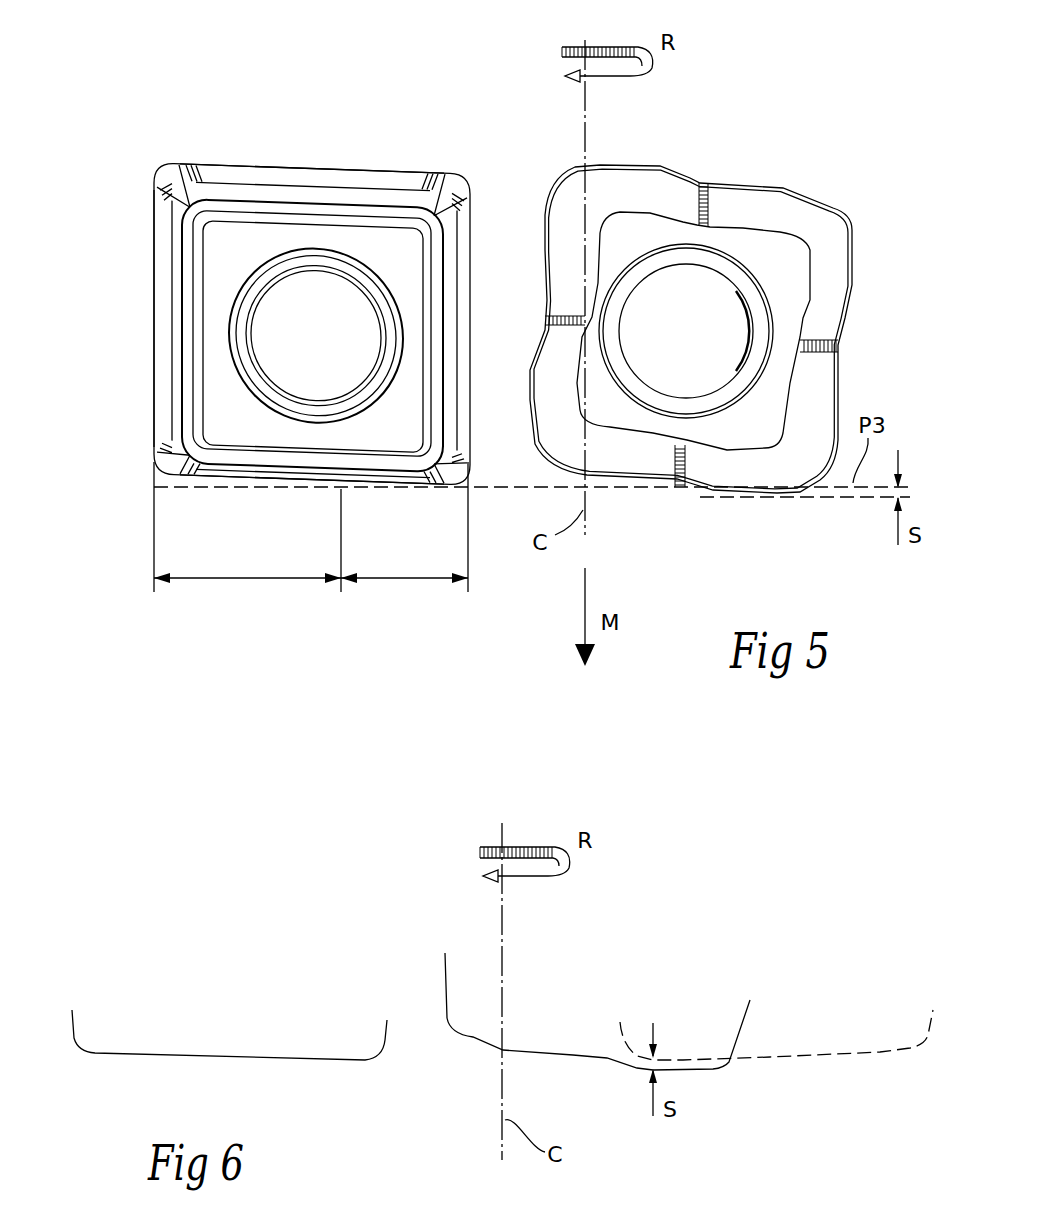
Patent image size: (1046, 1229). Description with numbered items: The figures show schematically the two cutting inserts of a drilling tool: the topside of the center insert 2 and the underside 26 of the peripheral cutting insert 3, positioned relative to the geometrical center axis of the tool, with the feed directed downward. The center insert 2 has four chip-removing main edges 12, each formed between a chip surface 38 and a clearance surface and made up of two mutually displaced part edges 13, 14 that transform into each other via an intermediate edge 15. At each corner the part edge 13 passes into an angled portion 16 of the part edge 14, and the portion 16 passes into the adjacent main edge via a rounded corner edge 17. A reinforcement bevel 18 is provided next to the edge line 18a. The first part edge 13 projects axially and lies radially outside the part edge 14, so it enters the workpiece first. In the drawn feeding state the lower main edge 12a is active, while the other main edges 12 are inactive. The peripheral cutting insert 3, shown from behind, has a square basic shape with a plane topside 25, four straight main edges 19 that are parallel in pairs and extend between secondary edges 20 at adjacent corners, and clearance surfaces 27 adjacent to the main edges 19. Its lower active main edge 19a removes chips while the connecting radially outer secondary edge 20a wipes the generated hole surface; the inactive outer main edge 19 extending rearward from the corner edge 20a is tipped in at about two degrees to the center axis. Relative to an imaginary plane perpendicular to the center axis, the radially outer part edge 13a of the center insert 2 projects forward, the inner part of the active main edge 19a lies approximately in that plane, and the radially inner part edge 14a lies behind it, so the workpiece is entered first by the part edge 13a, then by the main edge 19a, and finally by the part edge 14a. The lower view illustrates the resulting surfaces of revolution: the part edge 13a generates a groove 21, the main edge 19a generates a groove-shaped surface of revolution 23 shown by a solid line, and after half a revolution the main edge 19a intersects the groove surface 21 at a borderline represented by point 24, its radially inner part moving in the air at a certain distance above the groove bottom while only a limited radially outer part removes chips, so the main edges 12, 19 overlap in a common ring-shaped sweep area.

In FIG. 5, the center insert 2 is at (806, 88).
In FIG. 5, the peripheral cutting insert 3 is at (218, 88).
In FIG. 5, the main edge 12 is at (724, 158).
In FIG. 5, the active main edge 12a is at (684, 512).
In FIG. 5, the first part edge 13 is at (615, 166).
In FIG. 5, the radially outer part edge 13a is at (753, 497).
In FIG. 5, the second part edge 14 is at (752, 182).
In FIG. 5, the radially inner part edge 14a is at (621, 482).
In FIG. 5, the intermediate edge 15 is at (680, 166).
In FIG. 5, the angled portion 16 is at (556, 206).
In FIG. 5, the rounded corner edge 17 is at (571, 173).
In FIG. 5, the reinforcement bevel 18 is at (852, 282).
In FIG. 5, the edge line 18a is at (853, 258).
In FIG. 5, the main edge 19 is at (350, 150).
In FIG. 5, the active main edge 19a is at (282, 498).
In FIG. 5, the secondary edge 20 is at (168, 176).
In FIG. 5, the radially outer secondary edge 20a is at (156, 472).
In FIG. 6, the groove 21 is at (689, 1058).
In FIG. 6, the groove-shaped surface of revolution 23 is at (222, 1055).
In FIG. 5, the point 24 is at (342, 482).
In FIG. 6, the point 24 is at (730, 1061).
In FIG. 5, the plane surface 25 is at (742, 433).
In FIG. 5, the underside 26 is at (385, 263).
In FIG. 5, the clearance surface 27 is at (300, 170).
In FIG. 5, the chip surface 38 is at (740, 223).